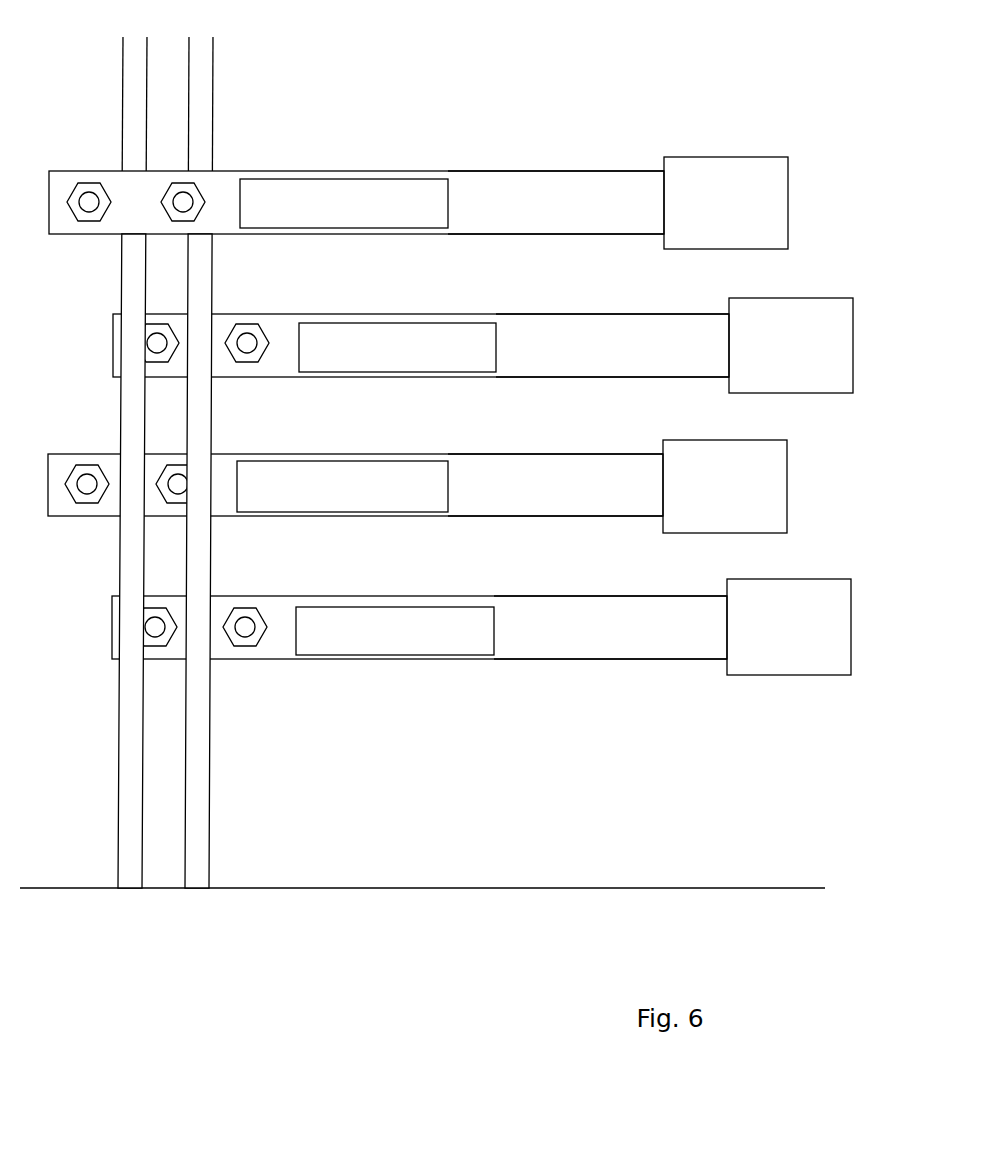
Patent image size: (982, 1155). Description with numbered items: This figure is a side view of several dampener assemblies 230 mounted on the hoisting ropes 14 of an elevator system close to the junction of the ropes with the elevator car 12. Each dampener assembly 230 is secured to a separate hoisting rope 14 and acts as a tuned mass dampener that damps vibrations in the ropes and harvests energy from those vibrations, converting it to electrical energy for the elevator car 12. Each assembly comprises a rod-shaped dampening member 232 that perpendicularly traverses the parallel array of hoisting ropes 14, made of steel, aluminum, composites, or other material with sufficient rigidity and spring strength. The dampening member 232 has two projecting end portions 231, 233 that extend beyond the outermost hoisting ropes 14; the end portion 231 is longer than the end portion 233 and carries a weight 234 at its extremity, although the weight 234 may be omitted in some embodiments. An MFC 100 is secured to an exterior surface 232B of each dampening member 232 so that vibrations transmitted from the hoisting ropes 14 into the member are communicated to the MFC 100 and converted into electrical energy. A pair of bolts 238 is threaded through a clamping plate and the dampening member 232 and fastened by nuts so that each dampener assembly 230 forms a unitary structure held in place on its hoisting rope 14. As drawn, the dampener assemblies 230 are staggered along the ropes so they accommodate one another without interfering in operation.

The elevator car 12 is at (709, 893).
The hoisting rope 14 is at (128, 737).
The MFC 100 is at (401, 183).
The dampener assembly 230 is at (435, 415).
The end portion 231 is at (588, 388).
The dampening member 232 is at (366, 414).
The exterior surface 232B is at (582, 213).
The end portion 233 is at (373, 388).
The weight 234 is at (734, 167).
The bolt 238 is at (178, 204).